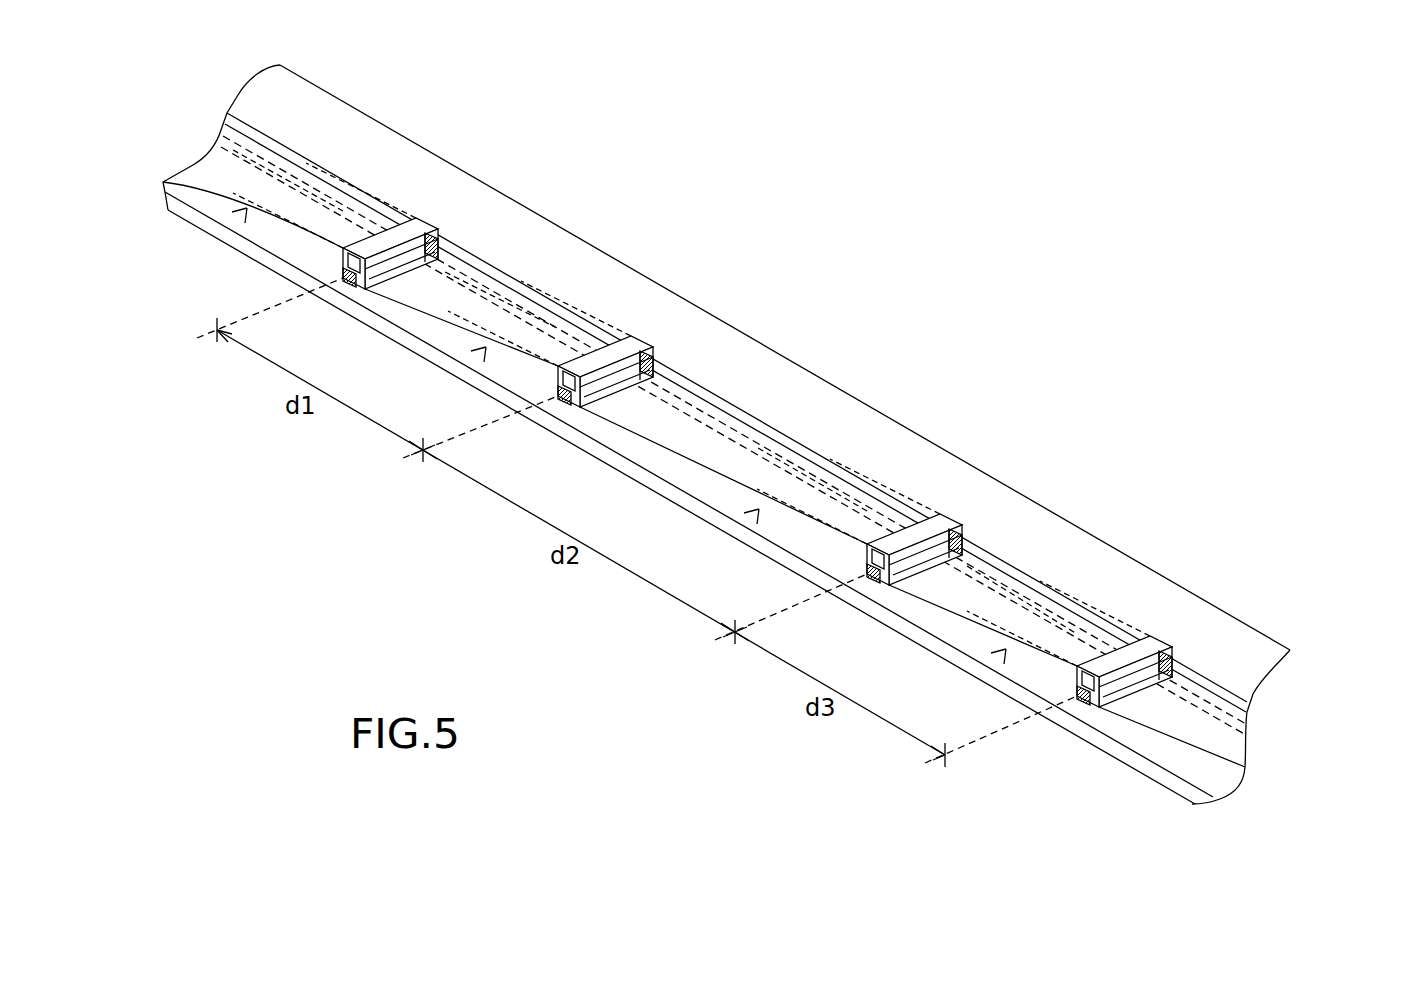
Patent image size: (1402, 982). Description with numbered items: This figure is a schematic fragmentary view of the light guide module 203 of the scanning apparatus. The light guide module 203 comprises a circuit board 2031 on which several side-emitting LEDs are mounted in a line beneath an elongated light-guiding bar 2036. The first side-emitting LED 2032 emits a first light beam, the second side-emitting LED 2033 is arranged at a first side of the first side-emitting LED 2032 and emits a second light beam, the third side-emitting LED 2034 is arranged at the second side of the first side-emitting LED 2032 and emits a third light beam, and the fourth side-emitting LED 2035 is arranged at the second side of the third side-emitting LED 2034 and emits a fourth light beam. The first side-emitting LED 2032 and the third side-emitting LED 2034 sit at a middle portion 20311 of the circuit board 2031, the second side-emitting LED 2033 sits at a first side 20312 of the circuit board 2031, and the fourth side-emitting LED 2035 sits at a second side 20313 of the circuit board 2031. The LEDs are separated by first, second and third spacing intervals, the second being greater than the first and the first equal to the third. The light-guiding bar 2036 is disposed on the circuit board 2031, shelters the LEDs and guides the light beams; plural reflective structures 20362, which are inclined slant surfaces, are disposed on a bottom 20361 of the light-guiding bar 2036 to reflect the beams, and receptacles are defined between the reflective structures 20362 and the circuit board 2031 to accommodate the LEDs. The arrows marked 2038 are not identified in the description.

The light guide module 203 is at (1002, 443).
The circuit board 2031 is at (162, 196).
The middle portion 20311 is at (641, 480).
The first side 20312 is at (251, 250).
The second side 20313 is at (1156, 773).
The first side-emitting LED 2032 is at (573, 408).
The second side-emitting LED 2033 is at (348, 290).
The third side-emitting LED 2034 is at (868, 586).
The fourth side-emitting LED 2035 is at (1098, 708).
The light-guiding bar 2036 is at (273, 79).
The bottom 20361 is at (219, 165).
The reflective structures 20362 is at (282, 212).
The mounting direction 2038 is at (246, 210).